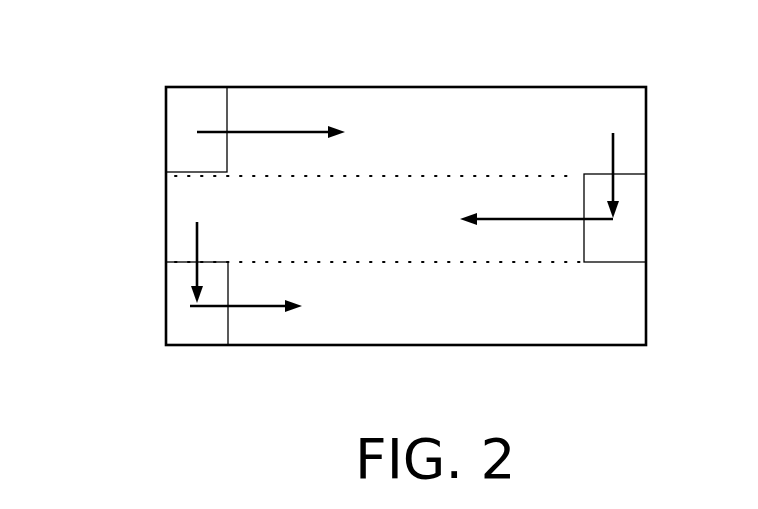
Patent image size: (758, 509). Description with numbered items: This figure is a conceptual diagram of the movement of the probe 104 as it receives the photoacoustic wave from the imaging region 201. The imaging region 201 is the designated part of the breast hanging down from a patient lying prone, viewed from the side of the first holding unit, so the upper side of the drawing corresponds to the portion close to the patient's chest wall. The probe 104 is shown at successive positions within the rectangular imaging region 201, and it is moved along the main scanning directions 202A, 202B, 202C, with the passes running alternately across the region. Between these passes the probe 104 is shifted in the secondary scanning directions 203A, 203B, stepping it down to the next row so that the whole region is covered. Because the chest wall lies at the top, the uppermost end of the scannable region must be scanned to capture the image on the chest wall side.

The imaging region 201 is at (253, 87).
The probe 104 is at (165, 122).
The main scanning direction 202A is at (313, 132).
The main scanning direction 202B is at (534, 219).
The main scanning direction 202C is at (250, 306).
The secondary scanning direction 203A is at (615, 153).
The secondary scanning direction 203B is at (190, 250).